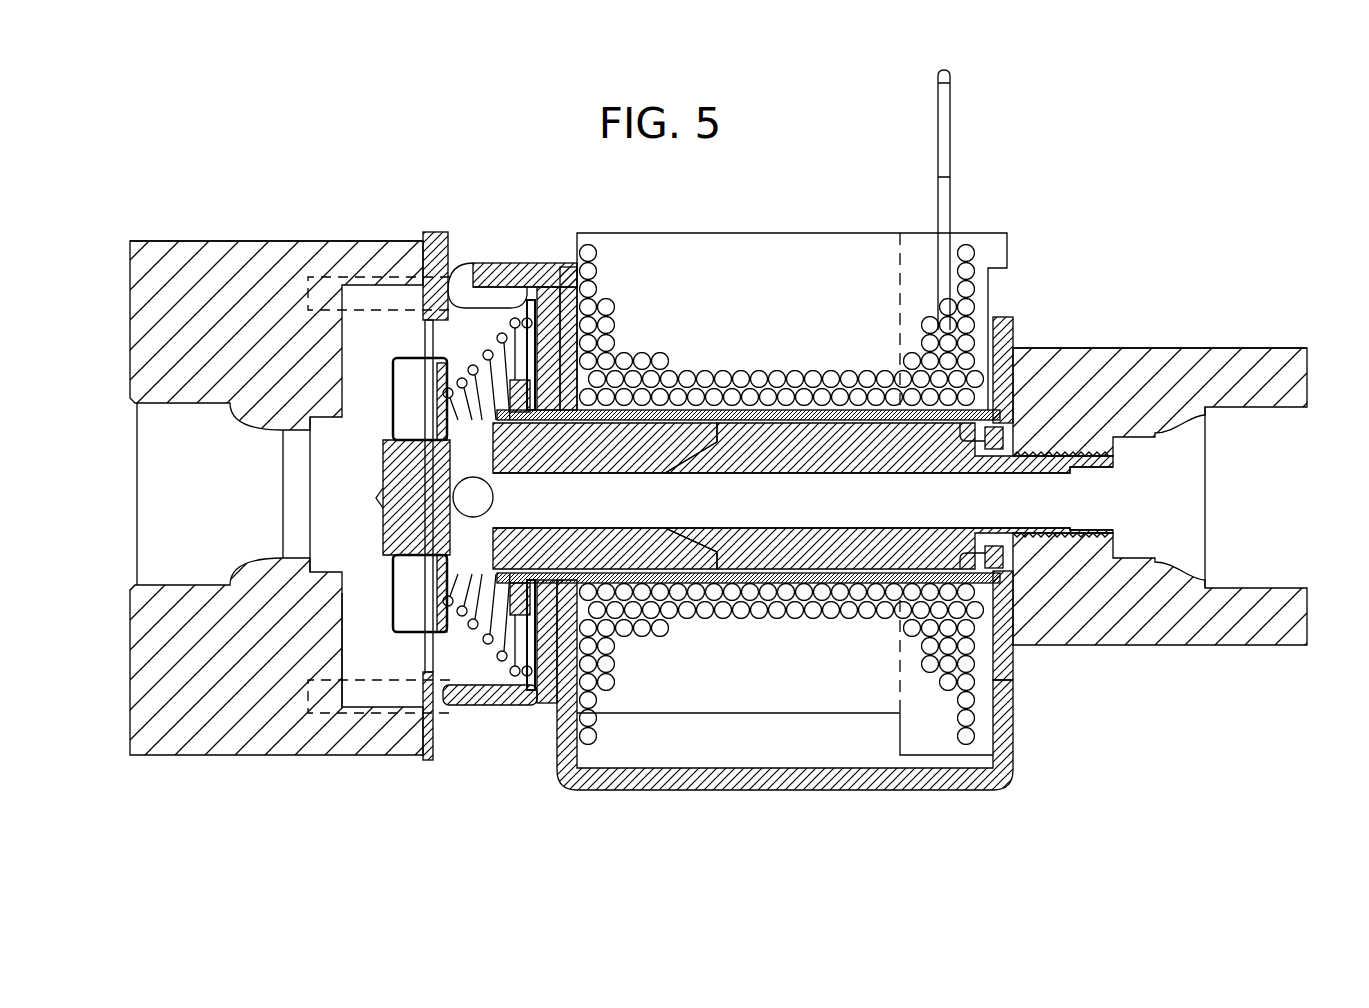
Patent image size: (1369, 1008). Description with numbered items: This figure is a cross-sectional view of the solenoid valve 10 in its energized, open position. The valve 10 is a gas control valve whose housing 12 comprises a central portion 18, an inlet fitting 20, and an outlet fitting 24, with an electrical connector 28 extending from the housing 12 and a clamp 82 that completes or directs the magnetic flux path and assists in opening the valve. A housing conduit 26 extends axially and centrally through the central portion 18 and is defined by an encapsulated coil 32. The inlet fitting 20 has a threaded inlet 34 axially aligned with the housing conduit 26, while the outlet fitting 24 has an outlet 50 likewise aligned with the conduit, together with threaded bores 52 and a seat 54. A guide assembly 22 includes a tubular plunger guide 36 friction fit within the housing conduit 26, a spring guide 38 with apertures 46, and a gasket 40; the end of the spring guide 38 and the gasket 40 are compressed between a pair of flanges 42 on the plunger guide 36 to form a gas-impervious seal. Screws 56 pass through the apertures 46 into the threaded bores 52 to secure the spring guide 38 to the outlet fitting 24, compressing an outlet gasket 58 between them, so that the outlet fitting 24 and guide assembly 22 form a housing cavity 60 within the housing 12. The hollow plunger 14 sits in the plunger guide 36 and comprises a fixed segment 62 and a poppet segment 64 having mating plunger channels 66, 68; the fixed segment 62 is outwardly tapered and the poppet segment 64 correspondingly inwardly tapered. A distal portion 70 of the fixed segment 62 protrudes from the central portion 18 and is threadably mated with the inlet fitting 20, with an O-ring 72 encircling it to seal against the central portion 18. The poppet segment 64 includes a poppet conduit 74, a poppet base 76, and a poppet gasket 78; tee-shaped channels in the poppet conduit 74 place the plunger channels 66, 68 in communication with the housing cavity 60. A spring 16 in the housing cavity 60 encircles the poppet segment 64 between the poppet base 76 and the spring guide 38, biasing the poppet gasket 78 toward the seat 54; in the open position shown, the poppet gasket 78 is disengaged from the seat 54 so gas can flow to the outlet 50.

The solenoid valve 10 is at (413, 148).
The housing 12 is at (1221, 344).
The hollow plunger 14 is at (630, 583).
The spring 16 is at (503, 742).
The central portion 18 is at (787, 200).
The inlet fitting 20 is at (1172, 360).
The guide assembly 22 is at (515, 255).
The outlet fitting 24 is at (282, 250).
The housing conduit 26 is at (913, 770).
The electrical connector 28 is at (965, 103).
The encapsulated coil 32 is at (732, 360).
The inlet 34 is at (1264, 542).
The plunger guide 36 is at (827, 417).
The spring guide 38 is at (503, 690).
The gasket 40 is at (562, 718).
The flanges 42 is at (530, 300).
The apertures 46 is at (450, 756).
The outlet 50 is at (165, 465).
The threaded bores 52 is at (338, 258).
The seat 54 is at (342, 413).
The screws 56 is at (475, 262).
The outlet gasket 58 is at (424, 762).
The housing cavity 60 is at (384, 672).
The fixed segment 62 is at (877, 453).
The poppet segment 64 is at (643, 421).
The plunger channel 66 is at (1000, 493).
The plunger channel 68 is at (713, 593).
The distal portion 70 is at (1060, 445).
The O-ring 72 is at (1015, 566).
The poppet conduit 74 is at (458, 742).
The poppet base 76 is at (455, 345).
The poppet gasket 78 is at (395, 572).
The clamp 82 is at (1012, 338).